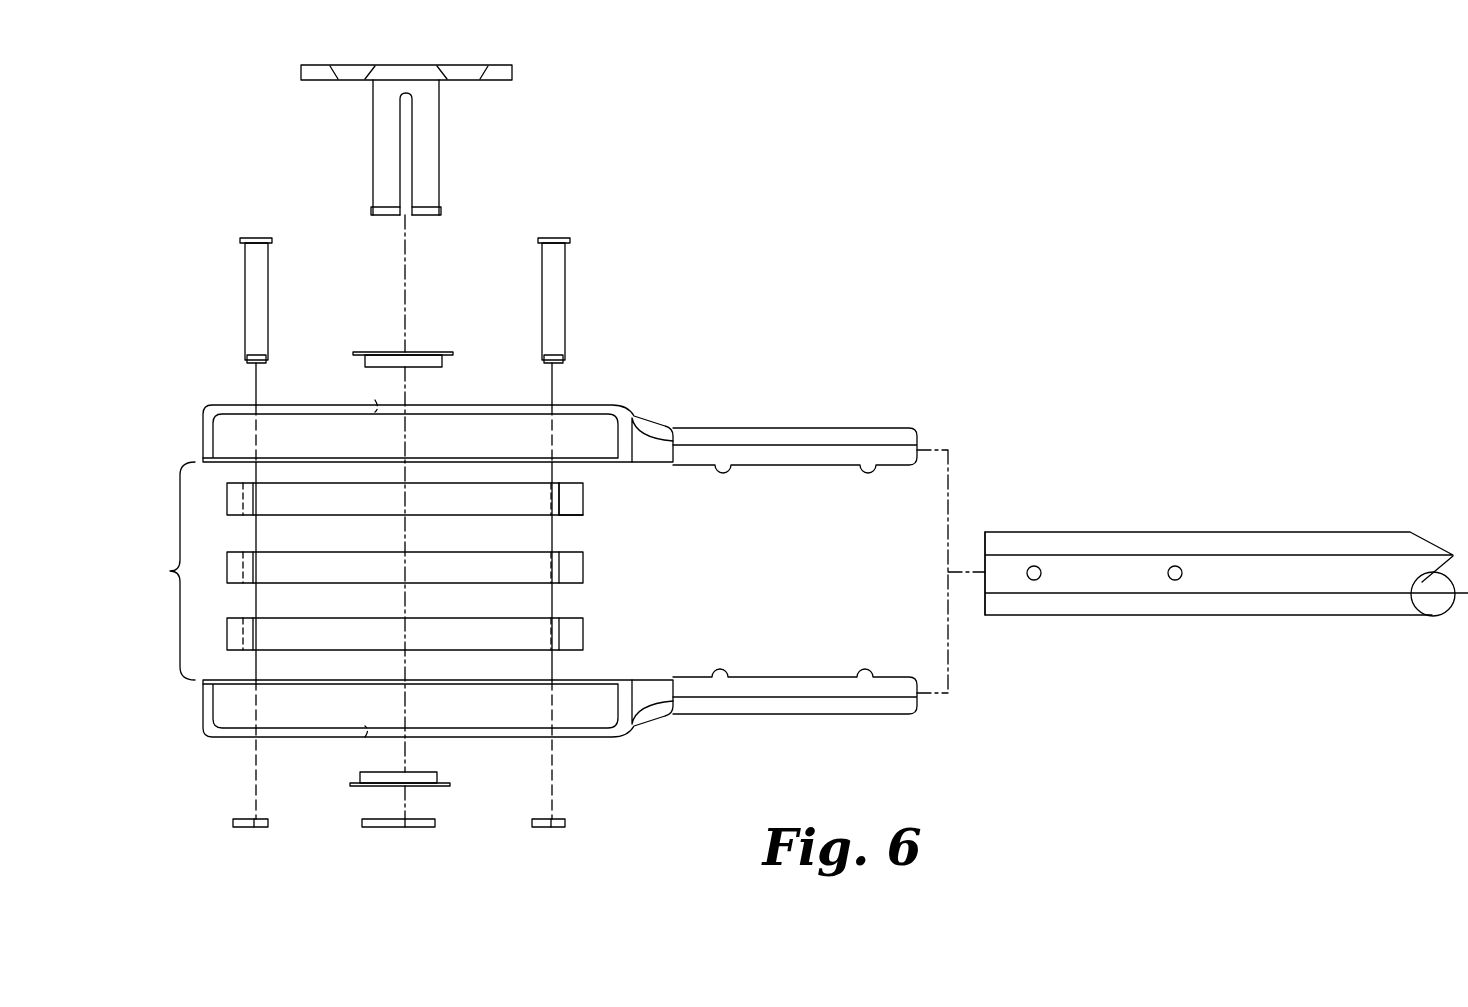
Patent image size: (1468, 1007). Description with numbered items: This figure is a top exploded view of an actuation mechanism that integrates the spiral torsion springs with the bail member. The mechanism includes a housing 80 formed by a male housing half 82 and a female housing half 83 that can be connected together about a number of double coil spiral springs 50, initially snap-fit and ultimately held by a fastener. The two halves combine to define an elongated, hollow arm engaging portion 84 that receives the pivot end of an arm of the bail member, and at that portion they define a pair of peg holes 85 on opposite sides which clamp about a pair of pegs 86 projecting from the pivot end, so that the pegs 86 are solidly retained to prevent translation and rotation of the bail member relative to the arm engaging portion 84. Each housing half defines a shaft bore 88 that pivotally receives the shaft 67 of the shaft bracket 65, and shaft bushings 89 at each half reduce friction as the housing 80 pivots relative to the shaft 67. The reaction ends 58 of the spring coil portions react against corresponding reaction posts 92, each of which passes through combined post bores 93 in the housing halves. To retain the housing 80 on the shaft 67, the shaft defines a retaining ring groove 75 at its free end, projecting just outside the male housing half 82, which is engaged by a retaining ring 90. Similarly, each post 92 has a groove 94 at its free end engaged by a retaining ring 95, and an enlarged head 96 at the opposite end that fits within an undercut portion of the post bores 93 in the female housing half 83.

The shaft bracket 65 is at (522, 74).
The shaft 67 is at (428, 134).
The retaining ring groove 75 is at (438, 213).
The reaction post 92 is at (252, 284).
The enlarged head 96 is at (255, 237).
The groove 94 is at (250, 358).
The post bores 93 is at (237, 401).
The shaft bushings 89 is at (418, 352).
The shaft bore 88 is at (375, 401).
The female housing half 83 is at (916, 428).
The male housing half 82 is at (901, 712).
The arm engaging portion 84 is at (780, 456).
The peg holes 85 is at (722, 474).
The double coil spiral spring 50 is at (590, 511).
The reaction end 58 is at (576, 492).
The housing 80 is at (163, 571).
The retaining ring 95 is at (240, 828).
The retaining ring 90 is at (375, 828).
The pegs 86 is at (1037, 579).